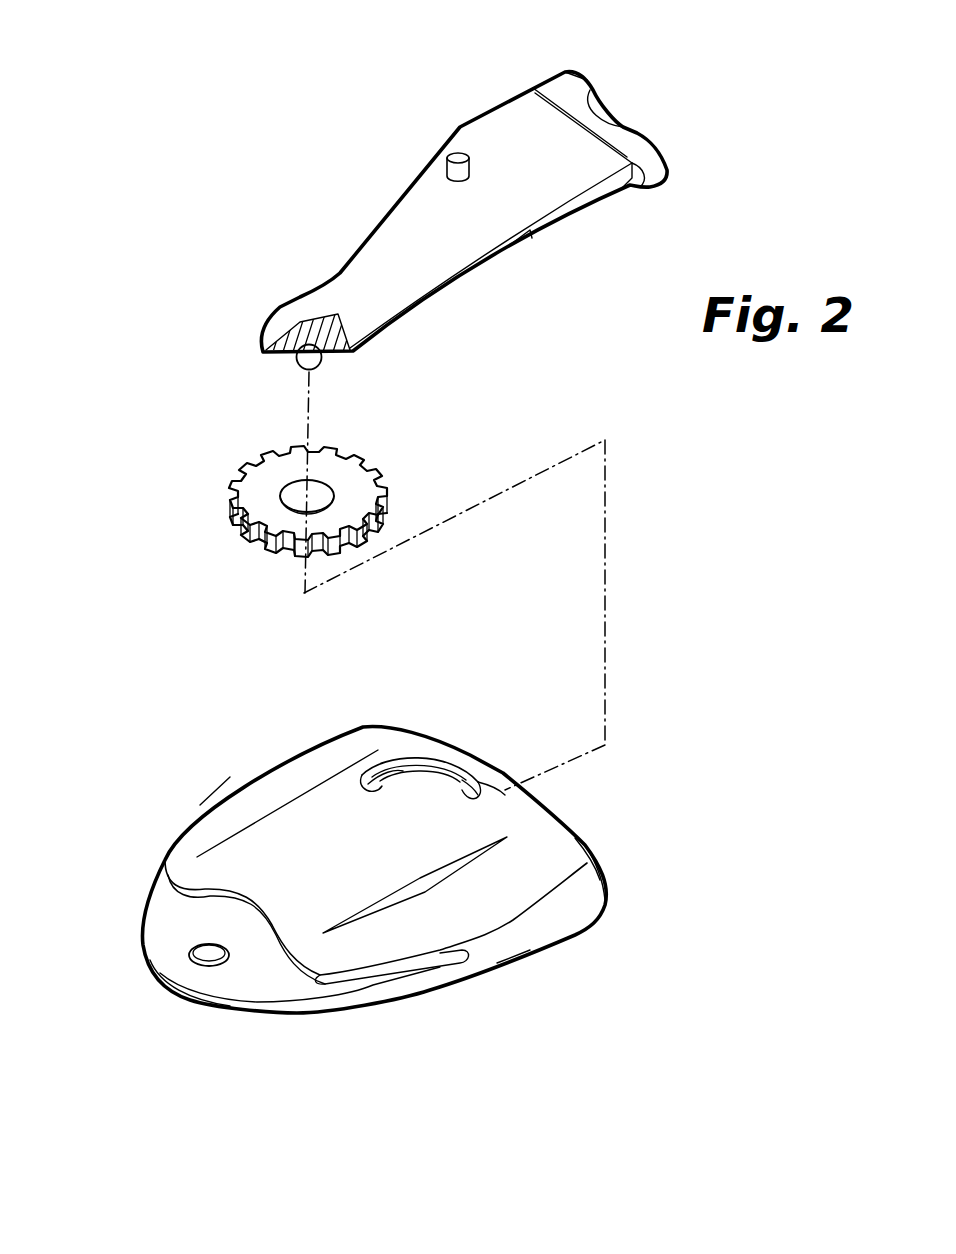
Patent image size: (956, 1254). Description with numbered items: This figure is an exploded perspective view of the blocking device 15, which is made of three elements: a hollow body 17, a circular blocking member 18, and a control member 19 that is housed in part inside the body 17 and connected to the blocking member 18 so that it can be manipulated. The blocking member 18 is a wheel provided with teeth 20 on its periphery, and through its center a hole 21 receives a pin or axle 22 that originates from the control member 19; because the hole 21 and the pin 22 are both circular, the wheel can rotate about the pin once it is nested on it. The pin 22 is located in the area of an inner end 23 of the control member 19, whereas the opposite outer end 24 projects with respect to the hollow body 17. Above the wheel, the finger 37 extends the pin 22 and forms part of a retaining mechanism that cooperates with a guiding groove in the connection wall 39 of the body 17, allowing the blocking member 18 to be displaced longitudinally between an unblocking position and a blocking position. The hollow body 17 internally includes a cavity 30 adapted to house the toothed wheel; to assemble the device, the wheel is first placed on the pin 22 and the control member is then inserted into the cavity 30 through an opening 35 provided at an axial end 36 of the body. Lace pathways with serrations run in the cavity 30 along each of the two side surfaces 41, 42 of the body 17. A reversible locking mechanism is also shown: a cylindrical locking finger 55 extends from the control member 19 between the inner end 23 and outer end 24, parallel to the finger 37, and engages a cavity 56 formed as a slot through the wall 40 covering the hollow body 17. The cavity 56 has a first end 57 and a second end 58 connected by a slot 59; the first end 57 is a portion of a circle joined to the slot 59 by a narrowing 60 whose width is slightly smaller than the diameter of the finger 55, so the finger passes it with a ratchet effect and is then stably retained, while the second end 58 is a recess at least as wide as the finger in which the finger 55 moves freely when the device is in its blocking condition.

The blocking device 15 is at (162, 265).
The hollow body 17 is at (167, 838).
The blocking member 18 is at (233, 517).
The control member 19 is at (403, 200).
The teeth 20 is at (267, 547).
The hole 21 is at (293, 498).
The pin 22 is at (273, 360).
The inner end 23 is at (290, 298).
The outer end 24 is at (565, 72).
The cavity 30 is at (218, 928).
The opening 35 is at (570, 802).
The axial end 36 is at (587, 837).
The finger 37 is at (320, 372).
The connection wall 39 is at (193, 1000).
The wall 40 is at (297, 832).
The side surface 41 is at (517, 940).
The side surface 42 is at (192, 797).
The locking finger 55 is at (470, 160).
The cavity 56 is at (420, 770).
The first end 57 is at (503, 775).
The second end 58 is at (363, 777).
The slot 59 is at (403, 770).
The narrowing 60 is at (468, 778).